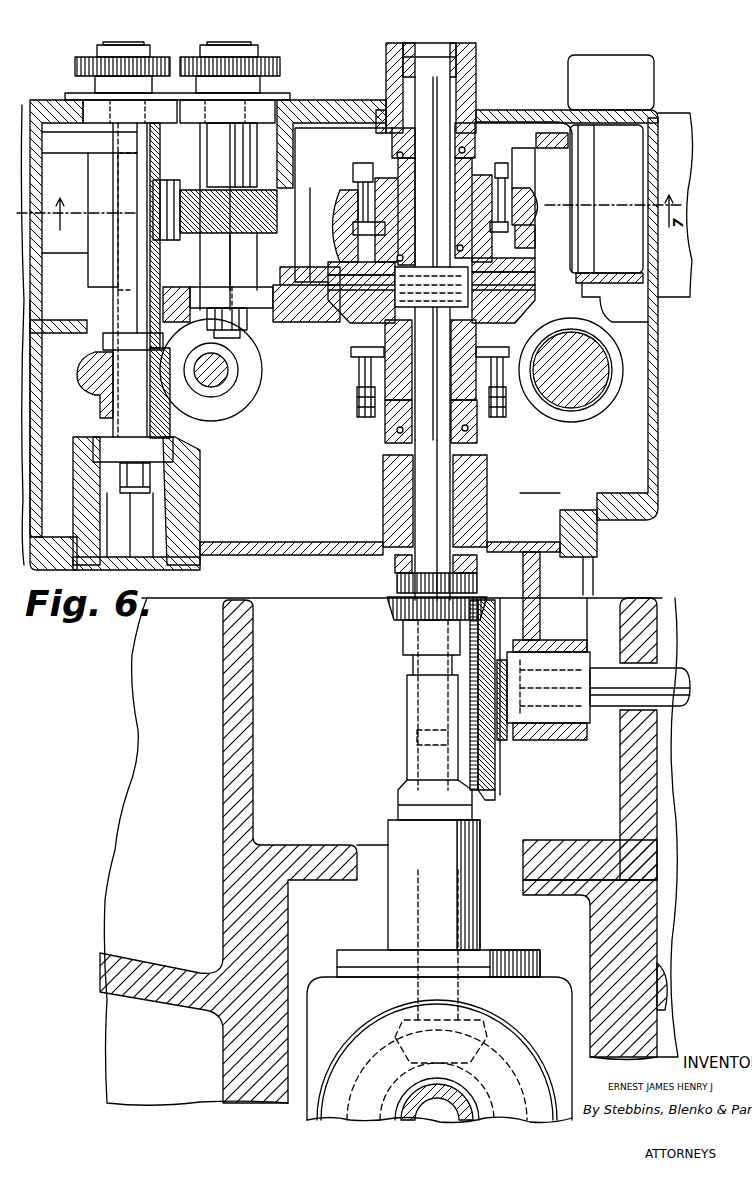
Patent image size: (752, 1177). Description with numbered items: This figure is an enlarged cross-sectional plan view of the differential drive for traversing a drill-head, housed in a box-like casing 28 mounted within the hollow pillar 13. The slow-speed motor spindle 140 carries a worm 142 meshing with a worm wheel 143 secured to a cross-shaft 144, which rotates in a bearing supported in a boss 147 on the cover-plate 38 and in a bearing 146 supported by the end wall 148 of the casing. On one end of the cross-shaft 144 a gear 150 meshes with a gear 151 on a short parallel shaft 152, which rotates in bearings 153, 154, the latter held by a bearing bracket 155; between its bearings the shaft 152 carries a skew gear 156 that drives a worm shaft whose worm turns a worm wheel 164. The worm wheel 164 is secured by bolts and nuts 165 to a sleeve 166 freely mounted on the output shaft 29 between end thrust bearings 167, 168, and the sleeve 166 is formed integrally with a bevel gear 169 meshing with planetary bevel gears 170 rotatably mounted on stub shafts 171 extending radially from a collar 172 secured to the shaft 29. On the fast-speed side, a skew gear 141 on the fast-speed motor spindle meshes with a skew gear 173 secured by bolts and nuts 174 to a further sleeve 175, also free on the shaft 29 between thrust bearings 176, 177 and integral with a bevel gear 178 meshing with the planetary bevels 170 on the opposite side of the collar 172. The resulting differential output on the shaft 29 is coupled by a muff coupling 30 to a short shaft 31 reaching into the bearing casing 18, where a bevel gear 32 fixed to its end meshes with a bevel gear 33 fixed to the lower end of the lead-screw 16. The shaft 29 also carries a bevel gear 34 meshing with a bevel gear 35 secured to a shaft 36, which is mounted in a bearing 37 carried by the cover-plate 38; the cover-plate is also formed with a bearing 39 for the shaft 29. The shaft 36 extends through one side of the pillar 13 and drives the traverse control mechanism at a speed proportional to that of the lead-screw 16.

The pillar 13 is at (222, 856).
The lead-screw 16 is at (415, 1108).
The bearing casing 18 is at (319, 980).
The box-like casing 28 is at (37, 385).
The output shaft 29 is at (420, 494).
The muff coupling 30 is at (407, 717).
The short shaft 31 is at (405, 838).
The bevel gear 32 is at (395, 1020).
The bevel gear 33 is at (365, 1060).
The bevel gear 34 is at (392, 605).
The bevel gear 35 is at (490, 782).
The shaft 36 is at (605, 708).
The bearing 37 is at (557, 740).
The cover-plate 38 is at (280, 552).
The bearing 39 is at (392, 473).
The spindle 140 is at (232, 400).
The skew gear 141 is at (540, 390).
The worm 142 is at (230, 380).
The worm wheel 143 is at (97, 362).
The cross-shaft 144 is at (122, 303).
The bearing 146 is at (98, 118).
The boss 147 is at (190, 490).
The end wall 148 is at (312, 110).
The gear 150 is at (85, 57).
The gear 151 is at (265, 57).
The short parallel shaft 152 is at (215, 163).
The bearing 153 is at (198, 118).
The bearing 154 is at (292, 272).
The bearing bracket 155 is at (270, 318).
The skew gear 156 is at (205, 228).
The worm wheel 164 is at (355, 200).
The bolts and nuts 165 is at (392, 160).
The sleeve 166 is at (462, 183).
The end thrust bearing 167 is at (464, 153).
The end thrust bearing 168 is at (530, 240).
The bevel gear 169 is at (338, 245).
The planetary bevel gears 170 is at (528, 292).
The stub shafts 171 is at (528, 265).
The collar 172 is at (433, 300).
The skew gear 173 is at (395, 300).
The bolts and nuts 174 is at (383, 425).
The sleeve 175 is at (495, 417).
The thrust bearing 176 is at (355, 365).
The thrust bearing 177 is at (396, 431).
The bevel gear 178 is at (383, 390).